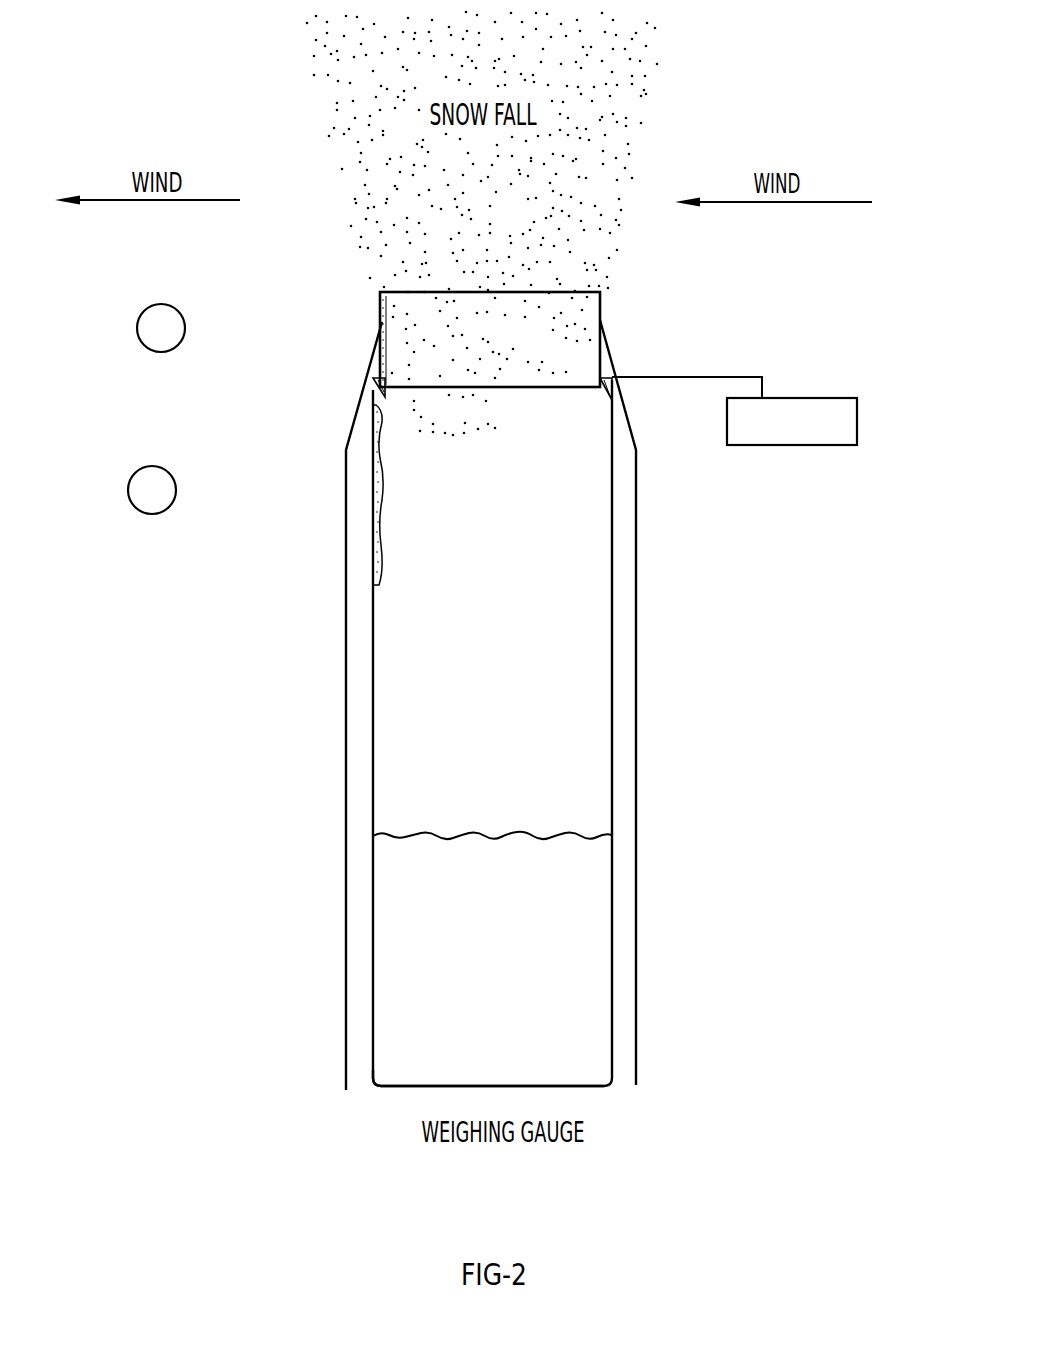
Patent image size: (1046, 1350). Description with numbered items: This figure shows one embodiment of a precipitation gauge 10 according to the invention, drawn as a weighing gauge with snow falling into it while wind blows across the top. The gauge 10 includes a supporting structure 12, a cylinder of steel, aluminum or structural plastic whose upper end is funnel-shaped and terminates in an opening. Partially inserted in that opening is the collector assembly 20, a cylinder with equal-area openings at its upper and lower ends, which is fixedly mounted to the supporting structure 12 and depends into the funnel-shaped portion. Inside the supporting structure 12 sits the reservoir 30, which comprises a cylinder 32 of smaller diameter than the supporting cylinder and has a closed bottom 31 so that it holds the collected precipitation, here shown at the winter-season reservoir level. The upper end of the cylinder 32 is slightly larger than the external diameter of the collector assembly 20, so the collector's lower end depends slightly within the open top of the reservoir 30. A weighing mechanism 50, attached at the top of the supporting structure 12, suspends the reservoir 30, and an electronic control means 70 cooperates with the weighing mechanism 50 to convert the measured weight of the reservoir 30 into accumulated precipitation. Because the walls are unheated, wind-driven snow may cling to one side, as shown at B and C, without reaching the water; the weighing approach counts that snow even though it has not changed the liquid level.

The precipitation gauge 10 is at (682, 354).
The supporting structure 12 is at (636, 523).
The collector assembly 20 is at (600, 312).
The reservoir 30 is at (612, 603).
The bucket bottom 31 is at (380, 1088).
The cylinder 32 is at (580, 682).
The weighing mechanism 50 is at (372, 378).
The means for electronically controlling 70 is at (840, 417).
The snow accumulation B is at (364, 329).
The snow accumulation C is at (358, 491).